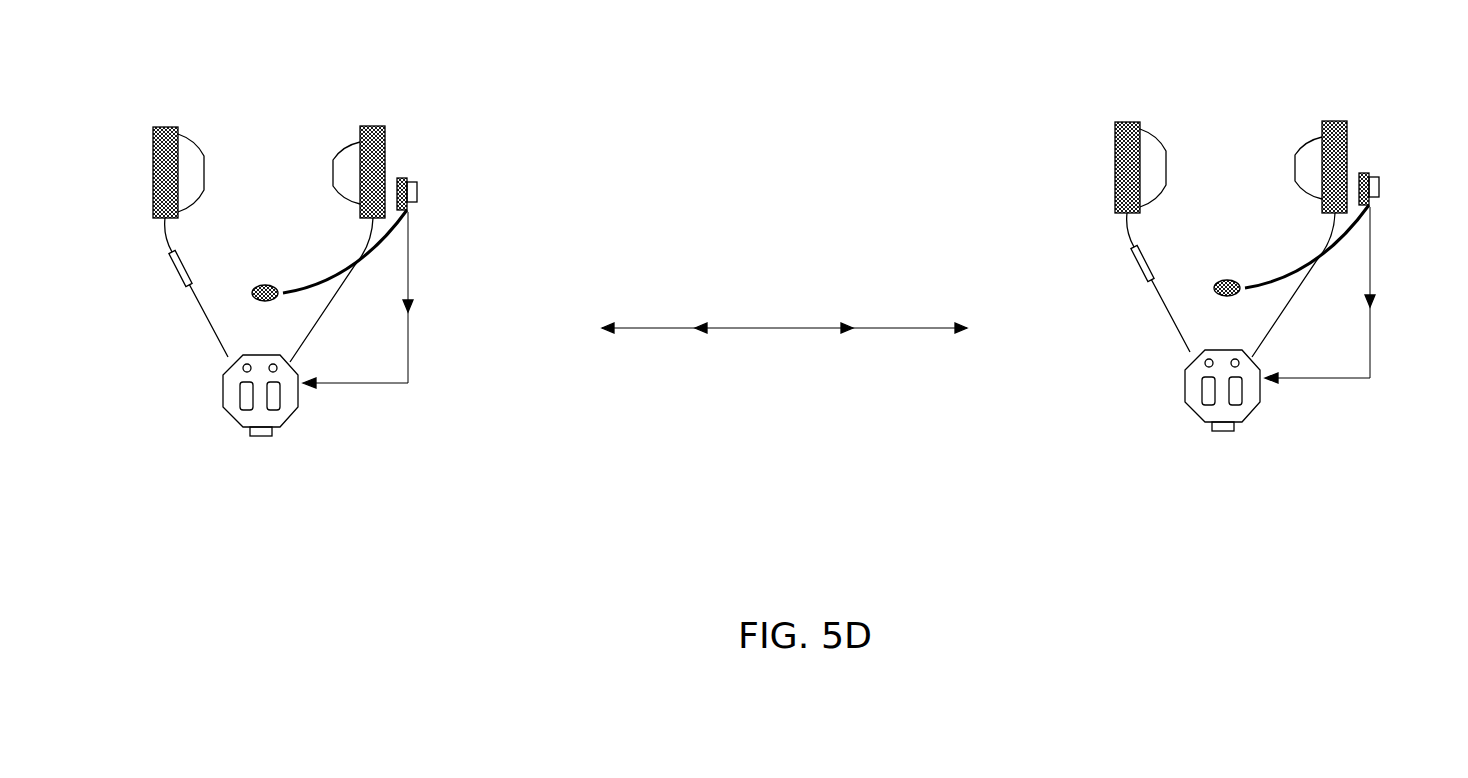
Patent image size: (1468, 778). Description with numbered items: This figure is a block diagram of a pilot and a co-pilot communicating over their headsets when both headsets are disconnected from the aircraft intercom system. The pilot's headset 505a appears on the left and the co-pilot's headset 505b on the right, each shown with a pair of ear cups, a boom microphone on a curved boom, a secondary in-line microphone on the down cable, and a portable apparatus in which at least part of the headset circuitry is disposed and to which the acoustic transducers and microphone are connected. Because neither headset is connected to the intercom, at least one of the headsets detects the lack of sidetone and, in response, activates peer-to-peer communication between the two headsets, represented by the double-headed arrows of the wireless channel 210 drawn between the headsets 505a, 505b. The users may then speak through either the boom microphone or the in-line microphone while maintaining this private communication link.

The headset 505a is at (465, 130).
The headset 505b is at (1383, 100).
The wireless channel 210 is at (784, 287).